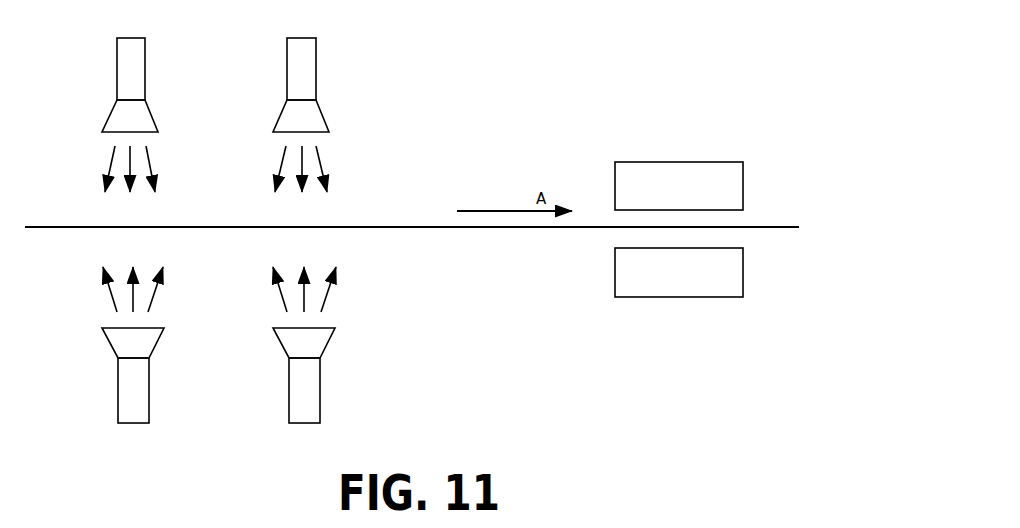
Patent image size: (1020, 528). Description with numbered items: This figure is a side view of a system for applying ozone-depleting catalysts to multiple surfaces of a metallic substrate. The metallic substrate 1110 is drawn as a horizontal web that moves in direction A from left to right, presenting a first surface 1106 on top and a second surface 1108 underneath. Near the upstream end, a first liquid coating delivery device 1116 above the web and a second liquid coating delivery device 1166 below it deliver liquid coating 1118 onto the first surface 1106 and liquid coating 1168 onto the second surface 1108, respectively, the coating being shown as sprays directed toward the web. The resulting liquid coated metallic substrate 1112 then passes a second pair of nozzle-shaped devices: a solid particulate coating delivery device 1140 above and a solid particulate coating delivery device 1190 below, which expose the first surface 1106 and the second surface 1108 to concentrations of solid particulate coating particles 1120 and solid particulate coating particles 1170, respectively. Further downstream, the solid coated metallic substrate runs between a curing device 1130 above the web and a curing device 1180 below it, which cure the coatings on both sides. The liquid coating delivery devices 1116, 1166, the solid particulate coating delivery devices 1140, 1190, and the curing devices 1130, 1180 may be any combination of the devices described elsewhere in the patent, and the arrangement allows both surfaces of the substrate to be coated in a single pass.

The first surface 1106 is at (770, 227).
The second surface 1108 is at (745, 230).
The metallic substrate 1110 is at (107, 228).
The liquid coated metallic substrate 1112 is at (175, 227).
The first liquid coating delivery device 1116 is at (146, 52).
The liquid coating 1118 is at (150, 165).
The solid particulate coating particles 1120 is at (323, 167).
The curing device 1130 is at (680, 162).
The solid particulate coating delivery device 1140 is at (316, 52).
The second liquid coating delivery device 1166 is at (150, 393).
The liquid coating 1168 is at (151, 300).
The solid particulate coating particles 1170 is at (336, 283).
The curing device 1180 is at (678, 297).
The solid particulate coating delivery device 1190 is at (321, 393).